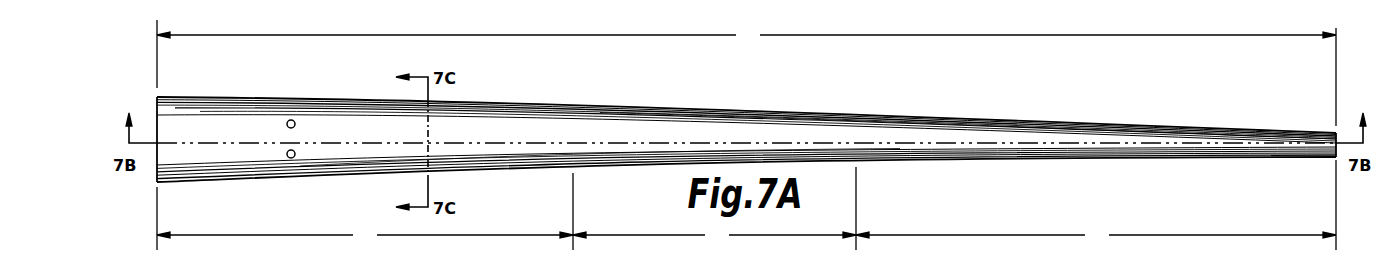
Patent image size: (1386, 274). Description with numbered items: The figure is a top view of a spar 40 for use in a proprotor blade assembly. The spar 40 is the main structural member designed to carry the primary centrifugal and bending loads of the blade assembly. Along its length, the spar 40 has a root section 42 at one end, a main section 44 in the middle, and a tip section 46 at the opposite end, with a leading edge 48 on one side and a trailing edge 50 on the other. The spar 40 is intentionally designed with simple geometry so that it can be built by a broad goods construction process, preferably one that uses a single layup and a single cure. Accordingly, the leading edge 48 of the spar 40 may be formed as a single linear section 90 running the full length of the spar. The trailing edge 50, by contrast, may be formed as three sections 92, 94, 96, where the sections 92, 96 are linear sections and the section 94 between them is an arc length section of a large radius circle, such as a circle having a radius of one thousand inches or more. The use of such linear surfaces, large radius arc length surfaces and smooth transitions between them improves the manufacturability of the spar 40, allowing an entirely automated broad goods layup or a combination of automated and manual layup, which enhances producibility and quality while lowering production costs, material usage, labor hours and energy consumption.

The spar 40 is at (910, 118).
The root section 42 is at (216, 97).
The main section 44 is at (733, 118).
The tip section 46 is at (1317, 133).
The leading edge 48 is at (623, 107).
The trailing edge 50 is at (628, 163).
The single linear section 90 is at (746, 73).
The linear section 92 is at (365, 211).
The arc length section 94 is at (714, 208).
The linear section 96 is at (1096, 205).